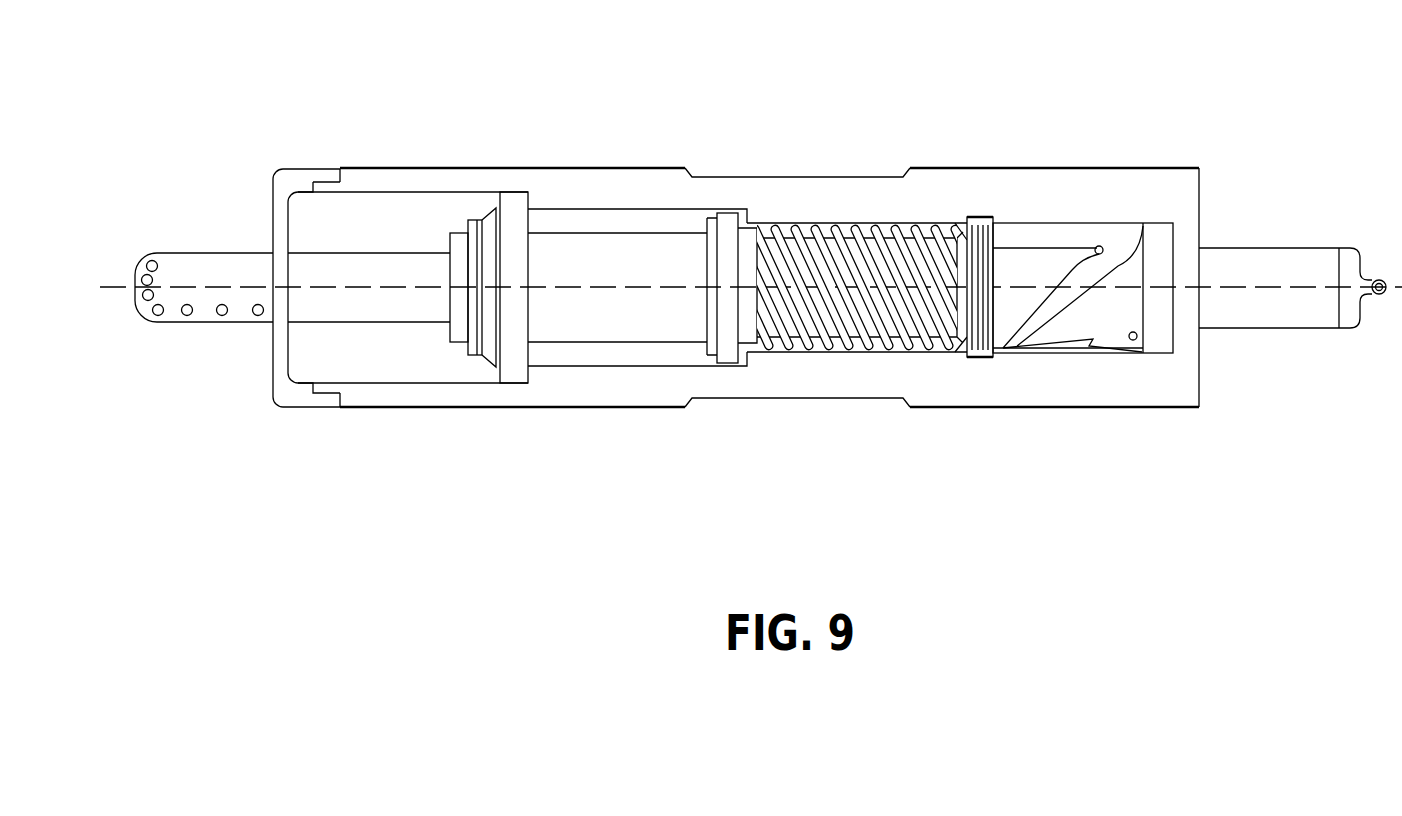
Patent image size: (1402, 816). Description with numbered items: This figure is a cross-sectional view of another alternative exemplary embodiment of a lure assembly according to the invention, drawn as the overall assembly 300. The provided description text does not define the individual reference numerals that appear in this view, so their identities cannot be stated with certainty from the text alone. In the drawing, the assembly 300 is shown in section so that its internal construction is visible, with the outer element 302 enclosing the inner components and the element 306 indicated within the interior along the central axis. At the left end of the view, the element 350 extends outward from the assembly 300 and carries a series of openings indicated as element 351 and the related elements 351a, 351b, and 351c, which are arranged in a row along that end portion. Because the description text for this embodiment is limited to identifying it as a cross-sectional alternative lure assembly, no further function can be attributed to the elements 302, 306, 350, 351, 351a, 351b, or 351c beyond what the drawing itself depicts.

The actuator assembly 300 is at (749, 235).
The housing 302 is at (568, 168).
The piston rod 306 is at (376, 288).
The plunger rod end 350 is at (185, 303).
The aperture 351 is at (146, 317).
The aperture 351a is at (179, 318).
The aperture 351b is at (262, 320).
The aperture 351c is at (223, 320).